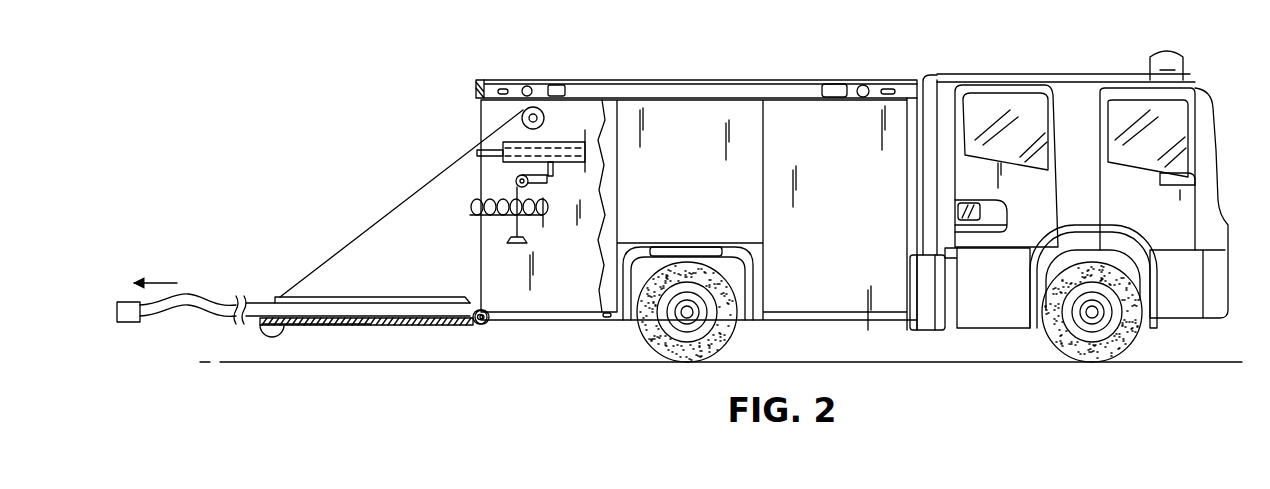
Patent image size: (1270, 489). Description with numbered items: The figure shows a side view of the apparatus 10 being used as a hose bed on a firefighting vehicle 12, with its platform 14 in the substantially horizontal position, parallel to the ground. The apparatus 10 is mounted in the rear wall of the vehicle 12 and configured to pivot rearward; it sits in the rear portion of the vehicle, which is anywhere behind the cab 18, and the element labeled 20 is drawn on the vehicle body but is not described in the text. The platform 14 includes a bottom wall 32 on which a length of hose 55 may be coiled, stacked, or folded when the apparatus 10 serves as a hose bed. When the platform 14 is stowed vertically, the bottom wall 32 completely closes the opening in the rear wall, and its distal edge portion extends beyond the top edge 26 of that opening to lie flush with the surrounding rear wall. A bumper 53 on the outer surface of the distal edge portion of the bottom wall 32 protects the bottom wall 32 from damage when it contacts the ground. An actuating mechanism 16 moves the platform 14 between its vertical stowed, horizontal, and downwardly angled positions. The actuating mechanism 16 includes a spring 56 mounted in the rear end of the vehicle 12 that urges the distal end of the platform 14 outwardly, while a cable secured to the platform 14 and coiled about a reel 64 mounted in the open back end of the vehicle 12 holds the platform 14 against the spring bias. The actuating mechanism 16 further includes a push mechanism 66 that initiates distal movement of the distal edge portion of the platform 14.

The apparatus 10 is at (467, 137).
The firefighting vehicle 12 is at (1030, 64).
The platform 14 is at (368, 329).
The actuating mechanism 16 is at (564, 180).
The cab 18 is at (1083, 91).
The truck body compartment 20 is at (737, 99).
The top edge 26 is at (423, 297).
The bottom wall 32 is at (305, 329).
The bumper 53 is at (275, 338).
The hose 55 is at (357, 310).
The spring 56 is at (528, 212).
The reel 64 is at (535, 106).
The push mechanism 66 is at (574, 128).